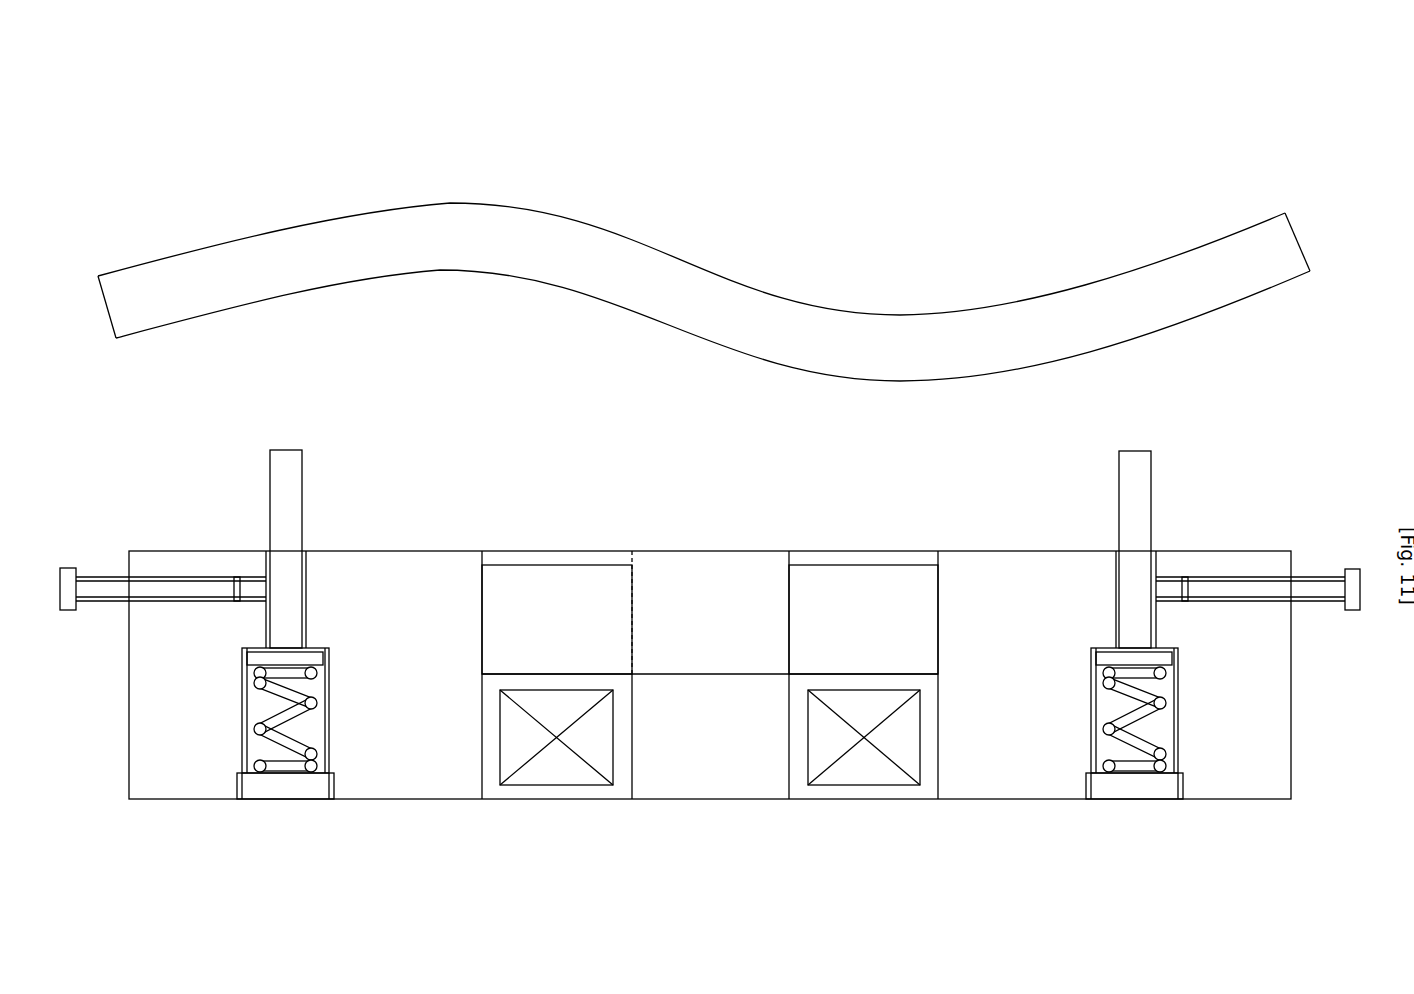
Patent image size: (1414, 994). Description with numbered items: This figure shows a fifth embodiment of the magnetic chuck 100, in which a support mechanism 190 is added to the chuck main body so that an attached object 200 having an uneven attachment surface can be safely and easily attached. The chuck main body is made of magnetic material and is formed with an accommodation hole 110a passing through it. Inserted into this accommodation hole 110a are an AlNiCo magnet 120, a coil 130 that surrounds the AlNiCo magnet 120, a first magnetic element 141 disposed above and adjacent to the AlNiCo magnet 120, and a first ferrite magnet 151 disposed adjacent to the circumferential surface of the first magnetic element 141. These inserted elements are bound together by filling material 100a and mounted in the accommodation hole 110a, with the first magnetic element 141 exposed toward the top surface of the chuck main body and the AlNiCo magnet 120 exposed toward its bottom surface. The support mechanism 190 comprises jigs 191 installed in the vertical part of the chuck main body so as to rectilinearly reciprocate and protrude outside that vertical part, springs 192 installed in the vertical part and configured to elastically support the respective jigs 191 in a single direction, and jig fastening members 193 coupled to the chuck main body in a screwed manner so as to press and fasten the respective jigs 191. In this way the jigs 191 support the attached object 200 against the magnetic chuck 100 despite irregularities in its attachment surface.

The attached object 200 is at (585, 224).
The magnetic chuck 100 is at (1238, 812).
The filling material 100a is at (558, 792).
The accommodation hole 110a is at (943, 741).
The AlNiCo magnet 120 is at (710, 800).
The coil 130 is at (865, 787).
The first magnetic element 141 is at (710, 548).
The first ferrite magnet 151 is at (563, 562).
The support mechanism 190 is at (1205, 540).
The jigs 191 is at (280, 488).
The springs 192 is at (290, 746).
The jig fastening members 193 is at (84, 594).